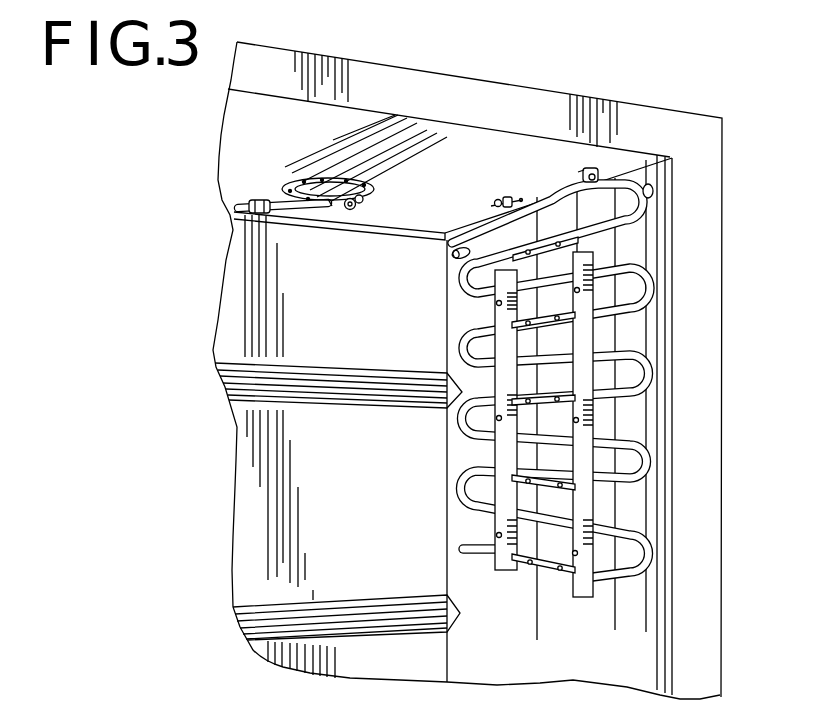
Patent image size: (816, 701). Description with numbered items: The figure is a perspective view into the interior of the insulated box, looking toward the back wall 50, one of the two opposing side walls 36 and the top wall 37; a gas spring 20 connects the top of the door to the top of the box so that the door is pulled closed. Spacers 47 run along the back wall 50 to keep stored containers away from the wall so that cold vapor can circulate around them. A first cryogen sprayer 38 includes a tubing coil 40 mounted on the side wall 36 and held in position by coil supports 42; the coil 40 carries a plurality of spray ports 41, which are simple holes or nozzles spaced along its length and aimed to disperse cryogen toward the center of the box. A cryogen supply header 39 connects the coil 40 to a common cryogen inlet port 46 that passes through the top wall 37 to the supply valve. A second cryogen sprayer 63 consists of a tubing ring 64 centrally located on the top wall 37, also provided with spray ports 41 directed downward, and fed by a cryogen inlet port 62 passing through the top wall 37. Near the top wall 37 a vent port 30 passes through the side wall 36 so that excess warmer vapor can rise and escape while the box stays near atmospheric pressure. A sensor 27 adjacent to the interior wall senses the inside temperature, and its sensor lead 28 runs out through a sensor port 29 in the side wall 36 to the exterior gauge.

The gas spring 20 is at (360, 338).
The sensor 27 is at (507, 203).
The sensor lead 28 is at (597, 167).
The sensor port 29 is at (653, 192).
The vent port 30 is at (453, 260).
The side wall 36 is at (720, 622).
The top wall 37 is at (310, 52).
The first cryogen sprayer 38 is at (657, 497).
The cryogen supply header 39 is at (423, 228).
The tubing coil 40 is at (647, 377).
The spray port 41 is at (316, 212).
The coil support 42 is at (567, 597).
The cryogen inlet port 46 is at (255, 200).
The spacer 47 is at (357, 400).
The back wall 50 is at (232, 325).
The cryogen inlet port 62 is at (357, 200).
The second cryogen sprayer 63 is at (248, 117).
The tubing ring 64 is at (315, 177).